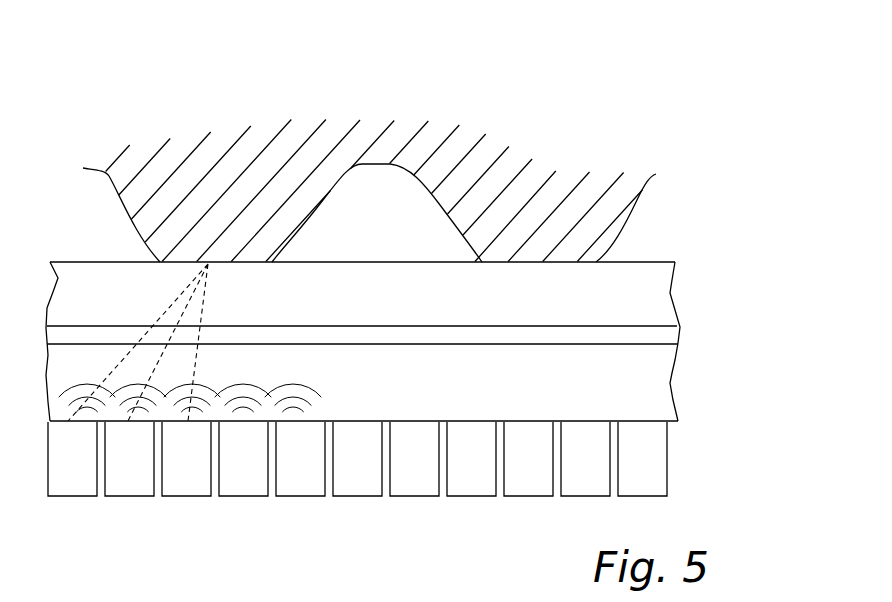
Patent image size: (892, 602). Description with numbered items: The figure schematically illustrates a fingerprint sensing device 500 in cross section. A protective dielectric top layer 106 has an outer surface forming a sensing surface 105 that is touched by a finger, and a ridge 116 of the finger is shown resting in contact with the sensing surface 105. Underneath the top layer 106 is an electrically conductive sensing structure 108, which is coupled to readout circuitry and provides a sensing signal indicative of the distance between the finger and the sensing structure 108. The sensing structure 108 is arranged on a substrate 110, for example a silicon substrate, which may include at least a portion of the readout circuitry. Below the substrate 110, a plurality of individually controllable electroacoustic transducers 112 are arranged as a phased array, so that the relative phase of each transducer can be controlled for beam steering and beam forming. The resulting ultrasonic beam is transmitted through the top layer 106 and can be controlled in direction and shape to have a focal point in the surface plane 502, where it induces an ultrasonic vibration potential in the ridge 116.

The fingerprint sensing device 500 is at (638, 97).
The sensing surface 105 is at (390, 261).
The ridge 116 is at (190, 228).
The protective dielectric top layer 106 is at (652, 292).
The electrically conductive sensing structure 108 is at (665, 332).
The substrate 110 is at (653, 387).
The surface plane 502 is at (220, 263).
The electroacoustic transducers 112 is at (188, 480).